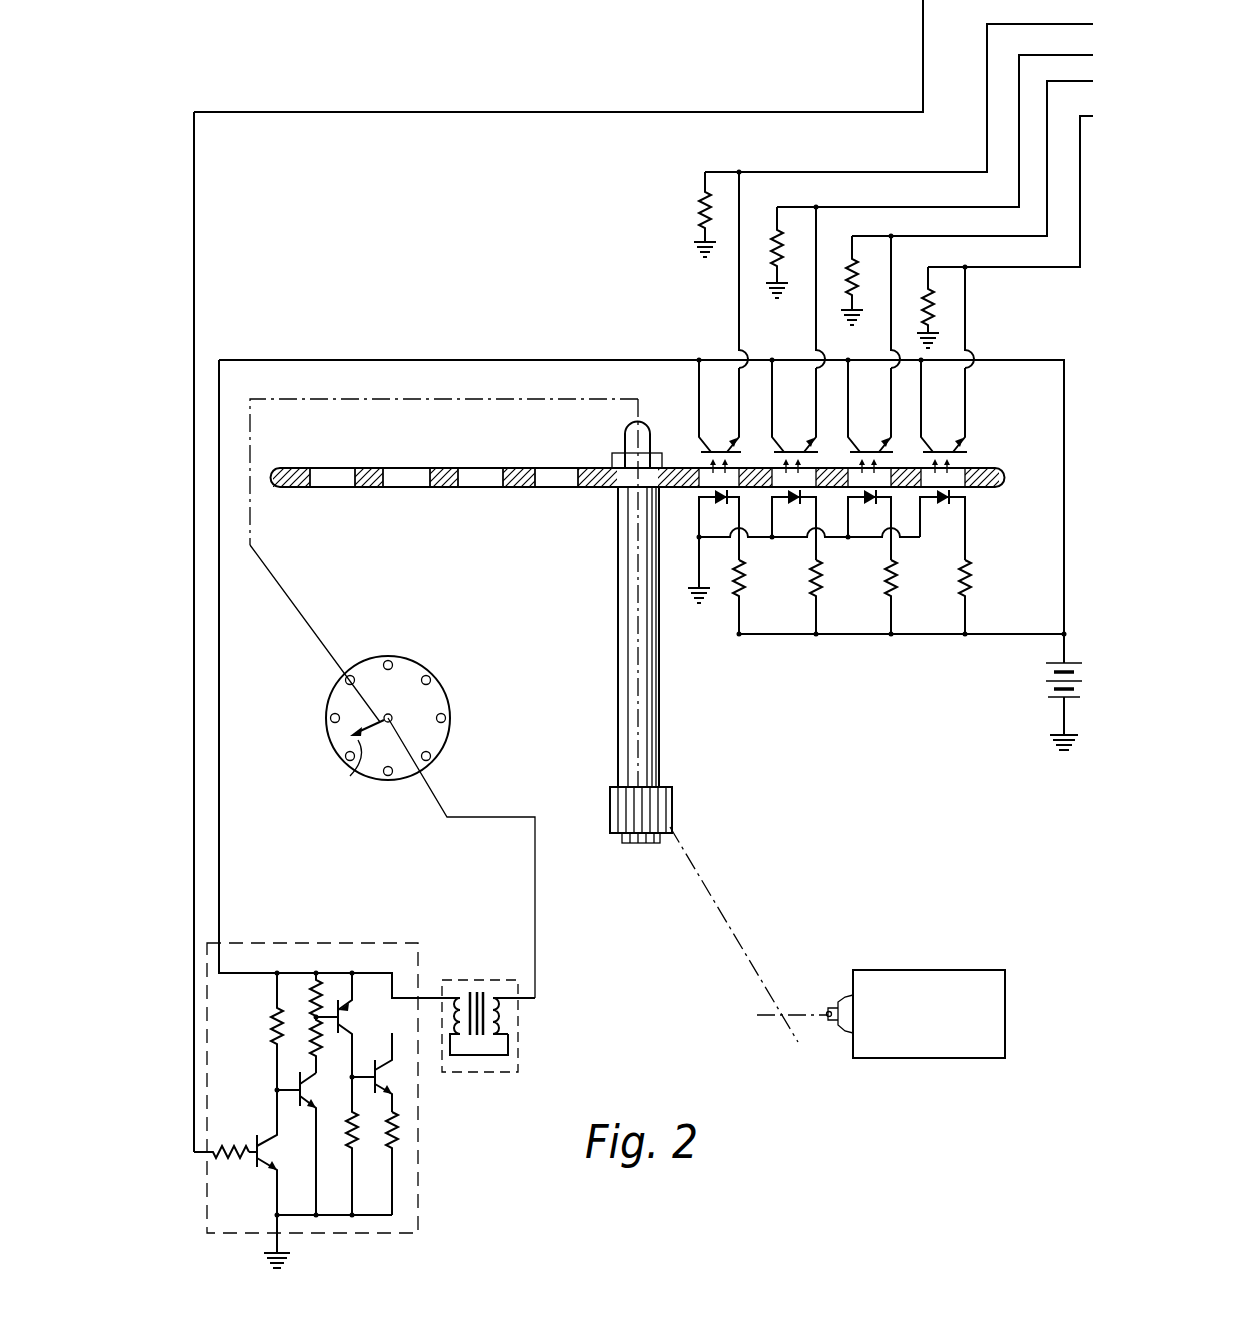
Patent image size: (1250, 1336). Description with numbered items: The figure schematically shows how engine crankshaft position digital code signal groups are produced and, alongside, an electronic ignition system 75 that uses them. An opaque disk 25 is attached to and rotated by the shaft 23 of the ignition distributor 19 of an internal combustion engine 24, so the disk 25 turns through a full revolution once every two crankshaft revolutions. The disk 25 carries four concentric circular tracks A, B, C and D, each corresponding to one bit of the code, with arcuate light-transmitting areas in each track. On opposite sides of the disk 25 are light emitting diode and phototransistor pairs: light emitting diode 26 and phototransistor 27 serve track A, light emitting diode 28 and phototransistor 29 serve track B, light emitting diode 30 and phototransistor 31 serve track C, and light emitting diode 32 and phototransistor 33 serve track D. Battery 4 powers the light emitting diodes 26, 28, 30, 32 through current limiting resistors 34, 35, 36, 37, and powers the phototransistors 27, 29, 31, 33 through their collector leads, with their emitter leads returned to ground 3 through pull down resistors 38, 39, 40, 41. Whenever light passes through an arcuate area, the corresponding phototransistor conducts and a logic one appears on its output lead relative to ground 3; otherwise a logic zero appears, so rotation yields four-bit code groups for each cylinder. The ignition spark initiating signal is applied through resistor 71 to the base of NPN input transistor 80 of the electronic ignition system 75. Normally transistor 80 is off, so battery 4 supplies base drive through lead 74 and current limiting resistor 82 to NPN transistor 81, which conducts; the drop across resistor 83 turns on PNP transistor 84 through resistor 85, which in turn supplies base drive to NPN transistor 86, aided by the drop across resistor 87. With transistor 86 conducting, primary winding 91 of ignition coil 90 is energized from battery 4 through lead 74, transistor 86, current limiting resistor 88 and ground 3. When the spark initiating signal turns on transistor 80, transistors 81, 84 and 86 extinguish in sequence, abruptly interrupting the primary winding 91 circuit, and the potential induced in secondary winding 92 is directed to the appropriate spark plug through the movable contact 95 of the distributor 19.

The point of reference or ground potential 3 is at (702, 255).
The battery 4 is at (1050, 681).
The ignition distributor 19 is at (447, 683).
The distributor shaft 23 is at (641, 730).
The internal combustion engine 24 is at (953, 970).
The disk 25 is at (447, 468).
The light emitting diode 26 is at (945, 499).
The phototransistor 27 is at (940, 450).
The light emitting diode 28 is at (870, 505).
The phototransistor 29 is at (872, 450).
The light emitting diode 30 is at (795, 505).
The phototransistor 31 is at (793, 450).
The light emitting diode 32 is at (720, 504).
The phototransistor 33 is at (718, 450).
The current limiting resistor 34 is at (972, 583).
The current limiting resistor 35 is at (903, 590).
The current limiting resistor 36 is at (822, 592).
The current limiting resistor 37 is at (750, 590).
The pull down resistor 38 is at (926, 318).
The pull down resistor 39 is at (850, 280).
The pull down resistor 40 is at (773, 258).
The pull down resistor 41 is at (703, 212).
The resistor 71 is at (230, 1160).
The lead 74 is at (222, 853).
The electronic ignition system 75 is at (325, 945).
The NPN input transistor 80 is at (268, 1150).
The NPN transistor 81 is at (312, 1095).
The current limiting resistor 82 is at (277, 1025).
The resistor 83 is at (316, 1003).
The PNP transistor 84 is at (348, 1015).
The resistor 85 is at (316, 1038).
The NPN transistor 86 is at (392, 1075).
The resistor 87 is at (352, 1142).
The current limiting resistor 88 is at (392, 1140).
The ignition coil 90 is at (508, 1029).
The primary winding 91 is at (457, 995).
The secondary winding 92 is at (505, 1013).
The movable contact 95 is at (353, 760).
The concentric circular track A is at (322, 477).
The concentric circular track B is at (410, 478).
The concentric circular track C is at (480, 478).
The concentric circular track D is at (553, 478).